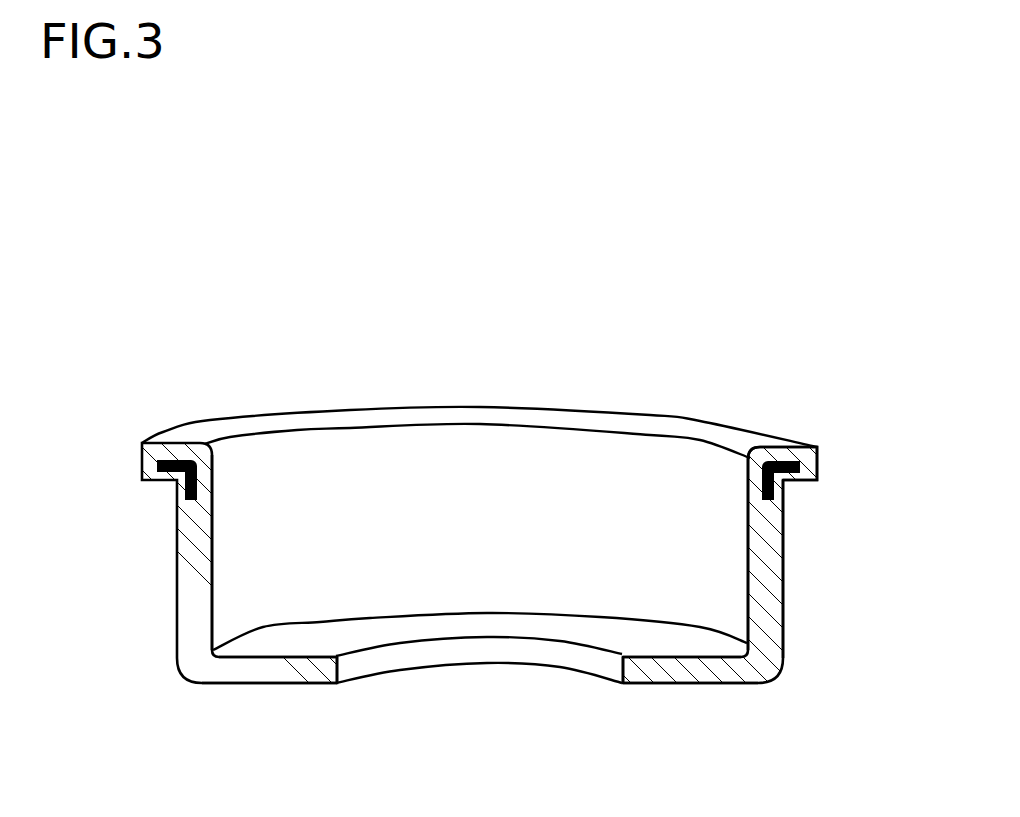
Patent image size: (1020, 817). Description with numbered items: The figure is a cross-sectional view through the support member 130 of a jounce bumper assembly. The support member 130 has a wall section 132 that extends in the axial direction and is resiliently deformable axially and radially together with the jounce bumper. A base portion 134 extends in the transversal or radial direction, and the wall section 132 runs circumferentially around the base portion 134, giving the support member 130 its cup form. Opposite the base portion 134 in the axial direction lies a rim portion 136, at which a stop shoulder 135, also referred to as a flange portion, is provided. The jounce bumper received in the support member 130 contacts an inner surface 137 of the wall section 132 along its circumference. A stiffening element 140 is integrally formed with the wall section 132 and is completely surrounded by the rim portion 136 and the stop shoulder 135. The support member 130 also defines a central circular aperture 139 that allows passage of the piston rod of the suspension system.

The support member 130 is at (706, 403).
The wall section 132 is at (720, 670).
The base portion 134 is at (772, 613).
The stop shoulder 135 is at (808, 449).
The rim portion 136 is at (202, 438).
The inner surface 137 is at (214, 566).
The central circular aperture 139 is at (593, 678).
The stiffening element 140 is at (783, 493).